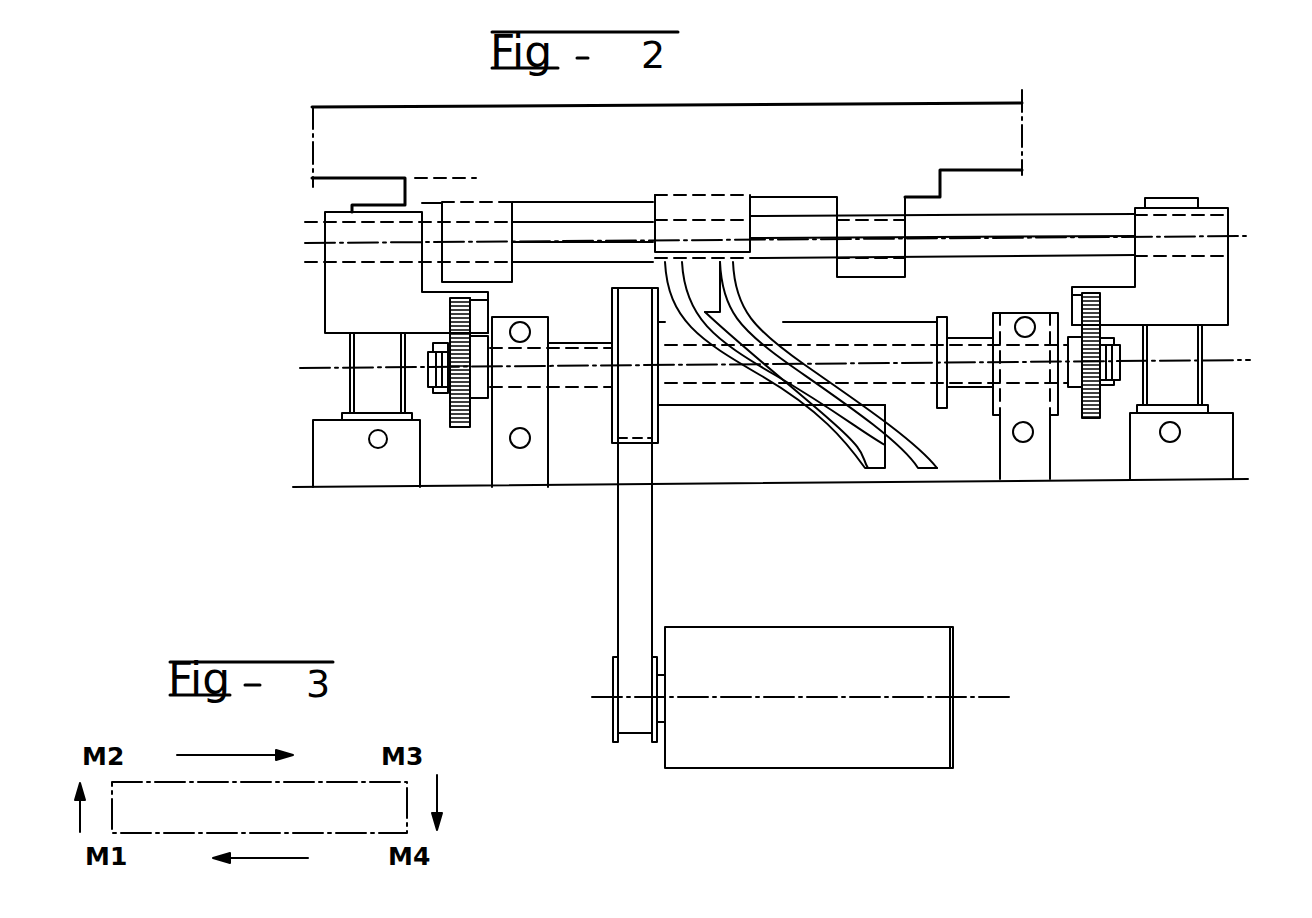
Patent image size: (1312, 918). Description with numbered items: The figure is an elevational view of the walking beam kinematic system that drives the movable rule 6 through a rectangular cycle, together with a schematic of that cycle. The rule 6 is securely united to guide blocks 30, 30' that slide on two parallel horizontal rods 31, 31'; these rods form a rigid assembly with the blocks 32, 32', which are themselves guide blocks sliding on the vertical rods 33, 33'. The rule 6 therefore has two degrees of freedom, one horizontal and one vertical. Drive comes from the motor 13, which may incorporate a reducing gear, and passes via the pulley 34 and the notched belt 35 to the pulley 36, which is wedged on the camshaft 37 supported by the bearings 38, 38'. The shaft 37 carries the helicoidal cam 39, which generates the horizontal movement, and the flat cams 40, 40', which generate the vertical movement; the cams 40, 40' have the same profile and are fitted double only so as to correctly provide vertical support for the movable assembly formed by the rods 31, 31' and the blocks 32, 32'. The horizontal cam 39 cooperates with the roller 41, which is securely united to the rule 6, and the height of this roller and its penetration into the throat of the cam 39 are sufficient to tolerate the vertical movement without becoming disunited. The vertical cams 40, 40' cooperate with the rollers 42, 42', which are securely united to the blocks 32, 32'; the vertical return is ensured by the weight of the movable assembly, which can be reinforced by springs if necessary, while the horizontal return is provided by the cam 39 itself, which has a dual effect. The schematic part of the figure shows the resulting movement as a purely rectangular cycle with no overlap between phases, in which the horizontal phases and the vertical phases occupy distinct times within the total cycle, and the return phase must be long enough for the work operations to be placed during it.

The movable rule 6 is at (757, 135).
The motor 13 is at (927, 667).
The guide block 30 is at (777, 207).
The guide block 30' is at (845, 198).
The horizontal rod 31 is at (989, 199).
The horizontal rod 31' is at (942, 237).
The guide block 32 is at (406, 200).
The guide block 32' is at (1150, 231).
The vertical rod 33 is at (346, 410).
The vertical rod 33' is at (1209, 402).
The pulley 34 is at (612, 682).
The notched belt 35 is at (635, 602).
The pulley 36 is at (666, 409).
The camshaft 37 is at (597, 375).
The bearing 38 is at (511, 425).
The bearing 38' is at (1013, 431).
The helicoidal cam 39 is at (857, 437).
The flat cam 40 is at (427, 422).
The flat cam 40' is at (1092, 422).
The roller 41 is at (707, 293).
The roller 42 is at (517, 335).
The roller 42' is at (1031, 329).